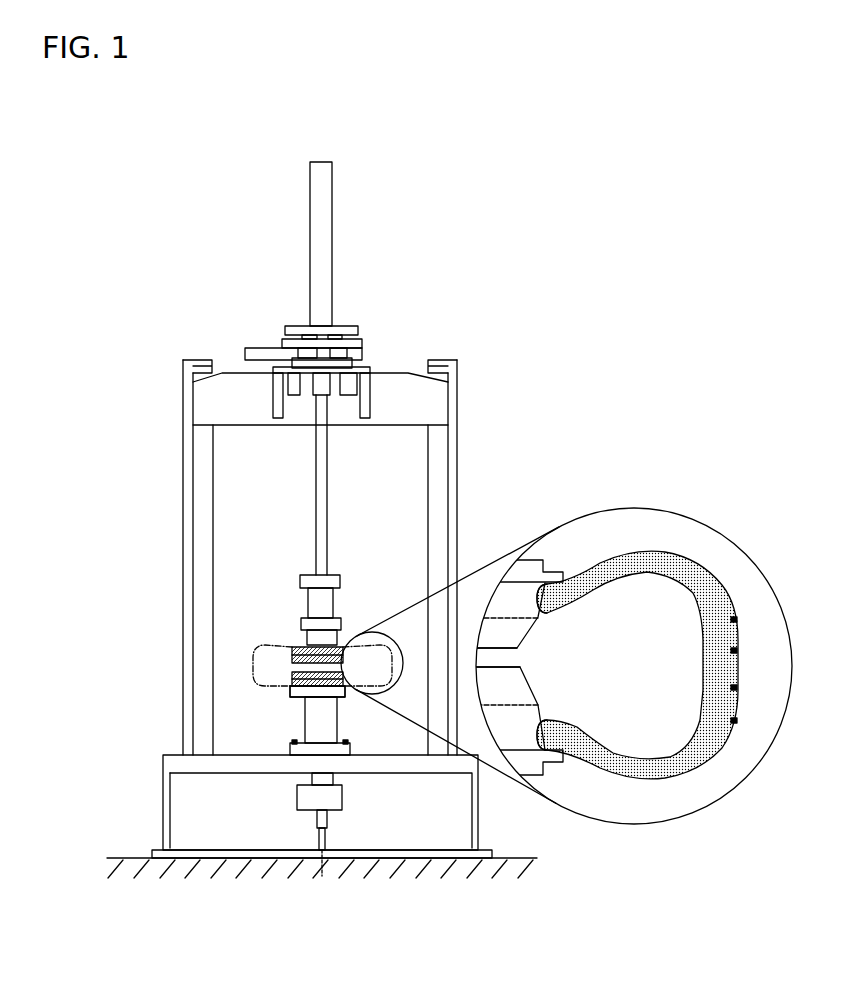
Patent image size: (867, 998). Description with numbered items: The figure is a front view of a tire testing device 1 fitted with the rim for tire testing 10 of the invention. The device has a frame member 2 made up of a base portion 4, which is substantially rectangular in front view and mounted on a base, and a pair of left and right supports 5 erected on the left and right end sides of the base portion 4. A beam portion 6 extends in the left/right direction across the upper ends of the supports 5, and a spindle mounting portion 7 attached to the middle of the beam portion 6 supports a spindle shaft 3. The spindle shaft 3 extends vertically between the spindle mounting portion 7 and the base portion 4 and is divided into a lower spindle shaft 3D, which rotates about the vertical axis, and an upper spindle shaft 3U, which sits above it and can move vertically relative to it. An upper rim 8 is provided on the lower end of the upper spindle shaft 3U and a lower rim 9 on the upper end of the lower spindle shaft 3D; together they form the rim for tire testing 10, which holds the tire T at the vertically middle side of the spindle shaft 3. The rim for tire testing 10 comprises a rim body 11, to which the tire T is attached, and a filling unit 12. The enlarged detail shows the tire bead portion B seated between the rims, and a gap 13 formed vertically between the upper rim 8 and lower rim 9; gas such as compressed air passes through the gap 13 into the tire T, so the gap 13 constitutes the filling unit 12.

The tire testing device 1 is at (555, 237).
The frame member 2 is at (130, 640).
The spindle shaft 3 is at (293, 612).
The upper spindle shaft 3U is at (313, 640).
The lower spindle shaft 3D is at (300, 688).
The base portion 4 is at (170, 753).
The supports 5 is at (183, 655).
The beam portion 6 is at (395, 383).
The spindle mounting portion 7 is at (365, 343).
The upper rim 8 is at (333, 653).
The lower rim 9 is at (332, 678).
The rim for tire testing 10 is at (290, 697).
The rim body 11 is at (508, 601).
The filling unit 12 is at (547, 662).
The gap 13 is at (505, 659).
The tire bead portion B is at (555, 597).
The tire T is at (692, 574).